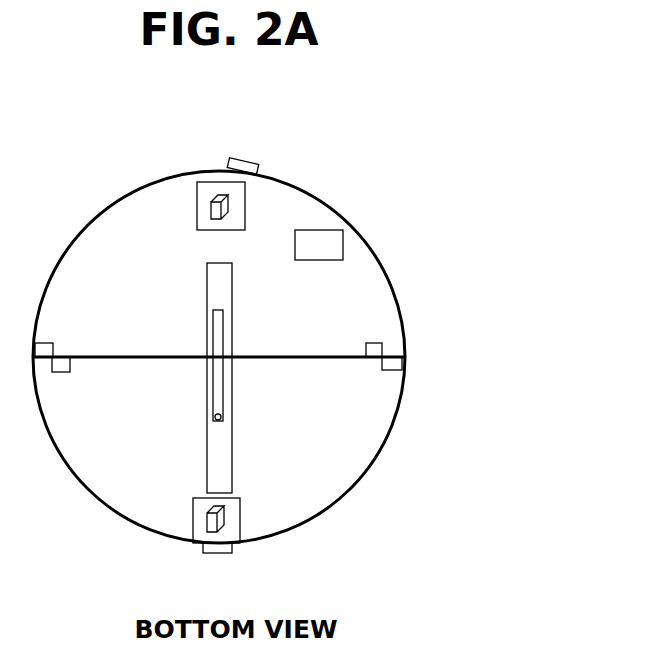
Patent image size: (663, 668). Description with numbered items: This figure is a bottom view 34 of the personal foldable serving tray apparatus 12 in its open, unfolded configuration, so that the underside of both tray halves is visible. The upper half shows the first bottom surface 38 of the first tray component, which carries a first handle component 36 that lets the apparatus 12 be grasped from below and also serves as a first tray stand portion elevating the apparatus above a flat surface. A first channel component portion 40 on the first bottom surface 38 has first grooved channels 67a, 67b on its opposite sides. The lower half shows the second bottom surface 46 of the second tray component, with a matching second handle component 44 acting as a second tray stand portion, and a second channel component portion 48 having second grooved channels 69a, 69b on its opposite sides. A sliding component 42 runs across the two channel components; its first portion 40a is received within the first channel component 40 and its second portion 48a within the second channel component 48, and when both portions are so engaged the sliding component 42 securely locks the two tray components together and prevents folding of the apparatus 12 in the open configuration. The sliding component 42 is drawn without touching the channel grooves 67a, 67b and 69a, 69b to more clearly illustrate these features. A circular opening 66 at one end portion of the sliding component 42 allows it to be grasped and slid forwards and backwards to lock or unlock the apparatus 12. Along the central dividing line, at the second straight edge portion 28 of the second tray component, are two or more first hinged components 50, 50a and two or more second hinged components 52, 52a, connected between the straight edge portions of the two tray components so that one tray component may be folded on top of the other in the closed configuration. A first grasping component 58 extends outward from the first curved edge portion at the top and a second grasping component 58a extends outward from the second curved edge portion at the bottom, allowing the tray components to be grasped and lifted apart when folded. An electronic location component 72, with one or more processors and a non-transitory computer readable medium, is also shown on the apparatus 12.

The personal foldable serving tray apparatus 12 is at (322, 192).
The second straight edge portion 28 is at (312, 358).
The bottom view 34 is at (505, 155).
The first handle component 36 is at (246, 204).
The first bottom surface 38 is at (121, 253).
The first channel component portion 40 is at (222, 272).
The first portion of the sliding component 40a is at (218, 332).
The sliding component 42 is at (223, 315).
The second handle component 44 is at (241, 520).
The second bottom surface 46 is at (121, 451).
The second channel component portion 48 is at (217, 447).
The second portion of the sliding component 48a is at (218, 395).
The first hinged component 50 is at (43, 343).
The first hinged component 50a is at (372, 343).
The second hinged component 52 is at (60, 372).
The second hinged component 52a is at (390, 371).
The first grasping component 58 is at (245, 160).
The second grasping component 58a is at (222, 553).
The circular opening 66 is at (221, 417).
The first grooved channel 67a is at (207, 310).
The first grooved channel 67b is at (233, 334).
The second grooved channel 69a is at (207, 413).
The second grooved channel 69b is at (233, 487).
The electronic location component 72 is at (306, 258).